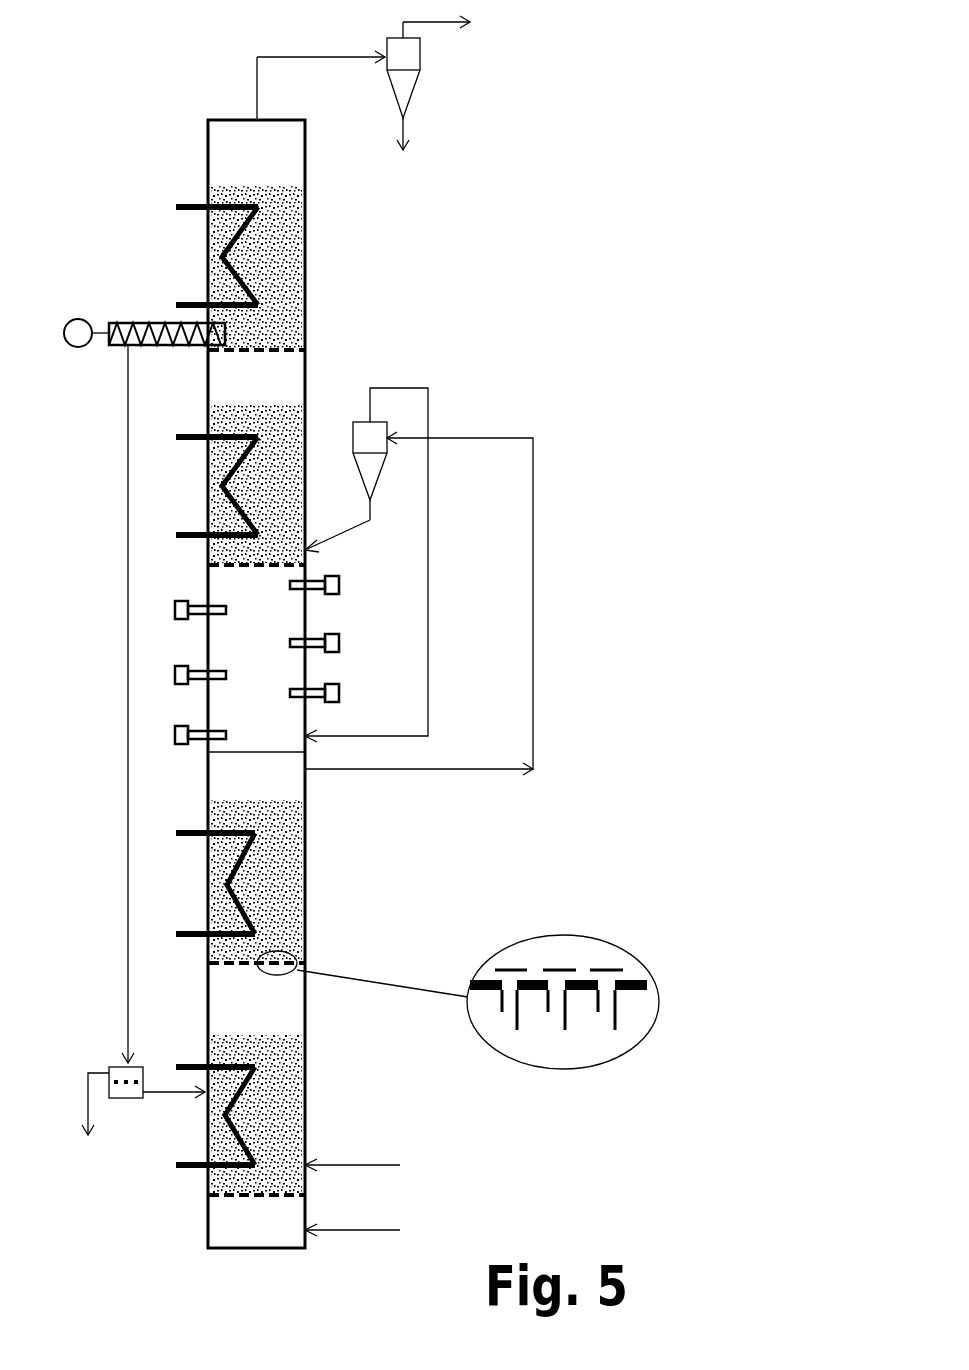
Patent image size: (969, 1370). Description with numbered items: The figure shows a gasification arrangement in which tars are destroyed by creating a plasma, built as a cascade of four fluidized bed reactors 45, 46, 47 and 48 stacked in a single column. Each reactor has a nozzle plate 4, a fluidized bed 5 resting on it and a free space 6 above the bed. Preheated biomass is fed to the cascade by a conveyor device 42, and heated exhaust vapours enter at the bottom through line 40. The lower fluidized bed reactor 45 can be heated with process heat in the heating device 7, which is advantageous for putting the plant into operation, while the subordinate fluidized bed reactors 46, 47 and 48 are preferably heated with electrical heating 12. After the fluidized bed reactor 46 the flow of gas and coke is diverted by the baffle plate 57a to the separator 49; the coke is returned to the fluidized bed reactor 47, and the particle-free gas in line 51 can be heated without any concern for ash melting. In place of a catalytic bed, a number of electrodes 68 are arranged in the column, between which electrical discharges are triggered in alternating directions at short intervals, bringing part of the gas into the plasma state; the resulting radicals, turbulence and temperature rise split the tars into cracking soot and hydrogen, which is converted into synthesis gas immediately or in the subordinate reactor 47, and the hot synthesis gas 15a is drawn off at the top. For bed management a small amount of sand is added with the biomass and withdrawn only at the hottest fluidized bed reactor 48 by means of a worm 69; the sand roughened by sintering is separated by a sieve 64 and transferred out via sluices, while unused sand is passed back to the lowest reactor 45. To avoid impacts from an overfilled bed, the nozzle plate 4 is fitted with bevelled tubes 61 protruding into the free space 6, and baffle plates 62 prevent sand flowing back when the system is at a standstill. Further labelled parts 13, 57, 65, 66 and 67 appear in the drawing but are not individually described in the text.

The nozzle plate 4 is at (235, 966).
The fluidized bed 5 is at (283, 905).
The free space 6 is at (283, 780).
The heating device 7 is at (215, 1116).
The electrical heating 12 is at (211, 570).
The cyclone separator 13 is at (405, 90).
The synthesis gas 15a is at (470, 25).
The line 40 is at (377, 1231).
The conveyor device 42 is at (377, 1166).
The lower fluidized bed reactor 45 is at (365, 1093).
The fluidized bed reactor 46 is at (365, 882).
The fluidized bed reactor 47 is at (330, 435).
The fluidized bed reactor 48 is at (350, 232).
The separator 49 is at (375, 462).
The line 51 is at (430, 624).
The gas line 57 is at (455, 772).
The baffle plate 57a is at (255, 752).
The tubes 61 is at (553, 1012).
The baffle plates 62 is at (600, 968).
The sieve 64 is at (120, 1063).
The product outlet 65 is at (90, 1131).
The feed line 66 is at (165, 1096).
The reaction zone 67 is at (265, 618).
The electrodes 68 is at (175, 735).
The worm 69 is at (165, 323).